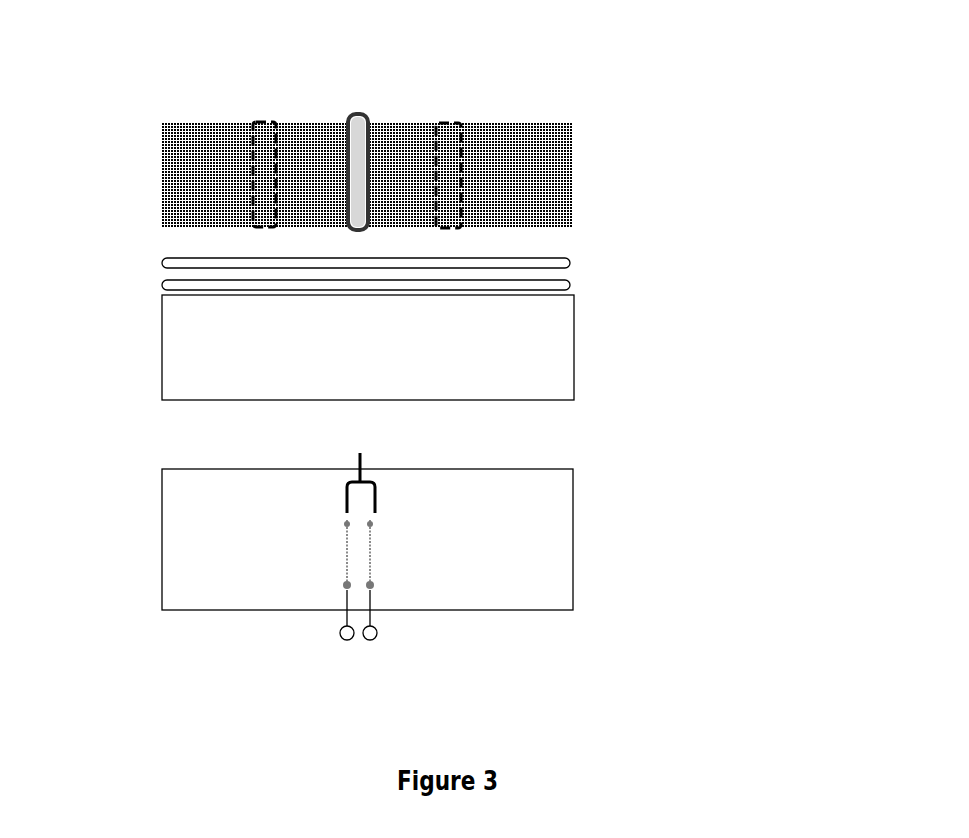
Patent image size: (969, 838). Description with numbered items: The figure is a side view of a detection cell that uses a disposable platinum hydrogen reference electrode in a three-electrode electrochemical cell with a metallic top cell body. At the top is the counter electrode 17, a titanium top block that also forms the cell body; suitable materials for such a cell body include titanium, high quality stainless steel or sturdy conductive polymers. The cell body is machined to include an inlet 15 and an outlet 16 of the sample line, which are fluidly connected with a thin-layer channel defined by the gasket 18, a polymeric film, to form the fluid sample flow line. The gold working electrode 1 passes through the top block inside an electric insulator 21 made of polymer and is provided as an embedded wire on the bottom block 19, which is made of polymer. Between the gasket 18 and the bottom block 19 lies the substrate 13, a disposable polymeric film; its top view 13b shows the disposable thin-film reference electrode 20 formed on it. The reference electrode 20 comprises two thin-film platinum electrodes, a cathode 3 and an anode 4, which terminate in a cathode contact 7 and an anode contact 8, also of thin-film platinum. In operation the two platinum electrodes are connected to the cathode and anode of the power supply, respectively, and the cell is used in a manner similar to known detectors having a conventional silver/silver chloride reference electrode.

The working electrode 1 is at (371, 117).
The electric insulator 21 is at (343, 132).
The outlet of sample line 16 is at (267, 120).
The inlet of sample line 15 is at (463, 108).
The counter electrode 17 is at (587, 182).
The gasket 18 is at (582, 264).
The substrate 13 is at (368, 202).
The bottom block 19 is at (590, 337).
The substrate top view 13b is at (528, 549).
The disposable Pt/H2 thin-film reference electrode 20 is at (355, 467).
The reference electrode anode 4 is at (340, 517).
The reference electrode cathode 3 is at (385, 518).
The reference electrode anode contact 8 is at (340, 608).
The reference electrode cathode contact 7 is at (383, 608).